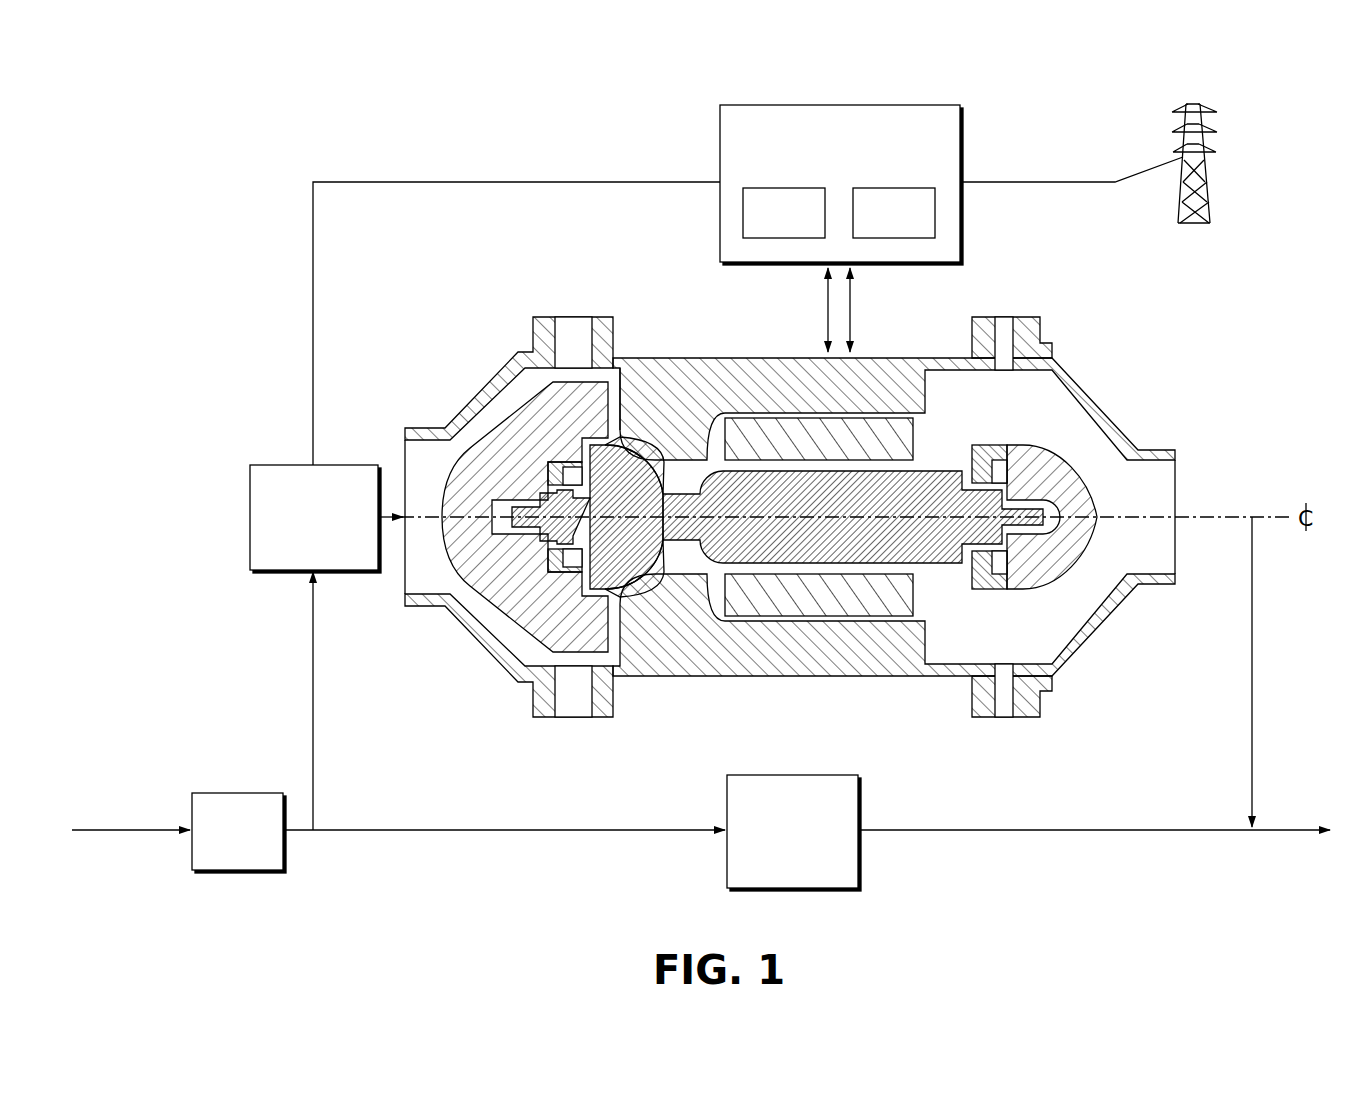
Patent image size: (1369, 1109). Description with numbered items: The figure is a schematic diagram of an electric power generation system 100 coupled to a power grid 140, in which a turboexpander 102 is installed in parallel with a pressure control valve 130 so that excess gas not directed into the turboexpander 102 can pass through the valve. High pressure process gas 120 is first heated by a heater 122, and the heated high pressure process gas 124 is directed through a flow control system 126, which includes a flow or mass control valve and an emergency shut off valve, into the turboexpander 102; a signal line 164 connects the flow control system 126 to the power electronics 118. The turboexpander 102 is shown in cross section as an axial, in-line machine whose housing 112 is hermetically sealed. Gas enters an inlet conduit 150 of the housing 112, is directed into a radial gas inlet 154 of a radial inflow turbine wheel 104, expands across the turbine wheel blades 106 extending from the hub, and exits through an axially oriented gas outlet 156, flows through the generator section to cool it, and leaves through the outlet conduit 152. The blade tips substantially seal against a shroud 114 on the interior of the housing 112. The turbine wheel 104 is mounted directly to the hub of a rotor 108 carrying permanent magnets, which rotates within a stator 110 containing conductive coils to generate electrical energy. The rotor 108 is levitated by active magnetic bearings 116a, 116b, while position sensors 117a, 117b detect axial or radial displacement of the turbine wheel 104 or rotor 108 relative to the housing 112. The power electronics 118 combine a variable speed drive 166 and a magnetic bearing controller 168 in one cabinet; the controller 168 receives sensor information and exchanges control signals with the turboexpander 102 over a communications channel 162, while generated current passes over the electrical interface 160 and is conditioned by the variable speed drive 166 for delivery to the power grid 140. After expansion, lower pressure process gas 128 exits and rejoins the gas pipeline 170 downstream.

The electric power generation system 100 is at (203, 156).
The turboexpander 102 is at (793, 551).
The turbine wheel 104 is at (598, 578).
The turbine wheel blades 106 is at (648, 570).
The rotor 108 is at (925, 553).
The stator 110 is at (800, 452).
The turboexpander housing 112 is at (907, 530).
The shroud 114 is at (633, 578).
The magnetic bearing 116a is at (481, 581).
The magnetic bearing 116b is at (1083, 460).
The position sensor 117a is at (577, 568).
The position sensor 117b is at (1005, 462).
The power electronics 118 is at (816, 170).
The high pressure process gas 120 is at (143, 831).
The heater 122 is at (215, 858).
The heated high pressure process gas 124 is at (313, 668).
The flow control system 126 is at (291, 559).
The lower pressure process gas 128 is at (1251, 672).
The pressure control valve 130 is at (770, 873).
The power grid 140 is at (1185, 205).
The inlet conduit 150 is at (405, 460).
The outlet conduit 152 is at (1178, 490).
The radial gas inlet 154 is at (619, 413).
The gas outlet 156 is at (675, 477).
The electrical interface 160 is at (853, 310).
The communications channel 162 is at (825, 310).
The control signal line 164 is at (455, 182).
The variable speed drive 166 is at (872, 230).
The magnetic bearing controller 168 is at (762, 230).
The gas pipeline 170 is at (1059, 831).